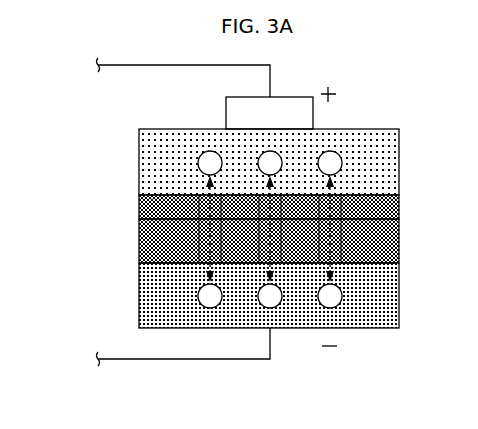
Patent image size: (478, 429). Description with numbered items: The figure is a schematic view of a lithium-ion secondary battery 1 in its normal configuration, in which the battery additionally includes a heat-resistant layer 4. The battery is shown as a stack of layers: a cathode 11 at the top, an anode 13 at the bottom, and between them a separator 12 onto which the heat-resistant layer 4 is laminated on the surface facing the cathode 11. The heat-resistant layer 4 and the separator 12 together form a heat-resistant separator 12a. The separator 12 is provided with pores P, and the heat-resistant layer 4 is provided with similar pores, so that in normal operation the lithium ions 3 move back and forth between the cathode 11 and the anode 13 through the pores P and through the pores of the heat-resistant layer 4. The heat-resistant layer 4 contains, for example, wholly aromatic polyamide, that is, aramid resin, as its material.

The lithium-ion secondary battery 1 is at (52, 132).
The lithium ions 3 is at (211, 151).
The heat-resistant layer 4 is at (139, 209).
The cathode 11 is at (139, 161).
The separator 12 is at (139, 246).
The heat-resistant separator 12a is at (99, 197).
The anode 13 is at (139, 295).
The pores P is at (216, 214).